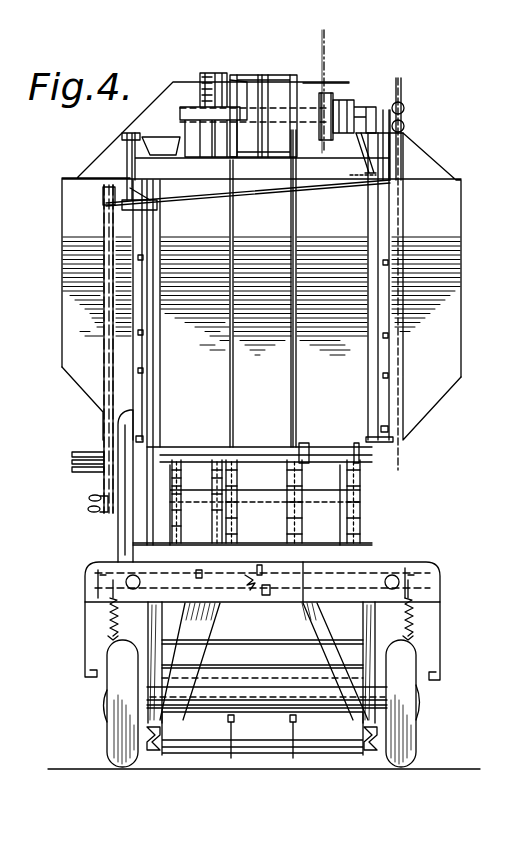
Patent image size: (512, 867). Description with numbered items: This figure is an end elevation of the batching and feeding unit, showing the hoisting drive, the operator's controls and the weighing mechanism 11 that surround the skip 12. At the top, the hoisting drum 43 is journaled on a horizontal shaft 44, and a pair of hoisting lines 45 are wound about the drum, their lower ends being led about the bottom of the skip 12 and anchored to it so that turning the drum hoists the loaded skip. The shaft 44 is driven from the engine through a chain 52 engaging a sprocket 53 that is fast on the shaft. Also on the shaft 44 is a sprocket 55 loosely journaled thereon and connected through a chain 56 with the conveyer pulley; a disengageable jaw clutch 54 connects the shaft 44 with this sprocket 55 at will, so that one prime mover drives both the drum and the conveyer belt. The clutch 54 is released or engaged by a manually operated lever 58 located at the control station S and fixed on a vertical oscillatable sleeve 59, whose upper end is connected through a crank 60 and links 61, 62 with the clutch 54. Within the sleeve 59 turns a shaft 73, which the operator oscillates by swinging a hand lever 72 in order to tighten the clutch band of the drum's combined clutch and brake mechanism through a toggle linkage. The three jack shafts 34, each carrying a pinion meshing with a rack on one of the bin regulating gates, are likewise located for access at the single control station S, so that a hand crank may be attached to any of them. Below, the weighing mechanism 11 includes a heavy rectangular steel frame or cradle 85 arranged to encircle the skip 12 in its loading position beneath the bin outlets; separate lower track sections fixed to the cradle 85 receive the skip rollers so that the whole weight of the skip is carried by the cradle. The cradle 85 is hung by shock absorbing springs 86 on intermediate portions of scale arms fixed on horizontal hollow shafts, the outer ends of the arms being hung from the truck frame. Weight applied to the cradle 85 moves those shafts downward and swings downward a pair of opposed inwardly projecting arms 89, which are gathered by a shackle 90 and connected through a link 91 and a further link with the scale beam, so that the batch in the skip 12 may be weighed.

The hoisting drum 43 is at (279, 84).
The horizontal shaft 44 is at (252, 124).
The hoisting lines 45 is at (293, 323).
The chain 52 is at (403, 377).
The sprocket 53 is at (400, 133).
The disengageable jaw clutch 54 is at (346, 103).
The sprocket 55 is at (329, 87).
The chain 56 is at (328, 58).
The manually operated lever 58 is at (89, 498).
The vertical oscillatable sleeve 59 is at (104, 313).
The crank 60 is at (103, 202).
The link 61 is at (256, 187).
The link 62 is at (363, 150).
The hand lever 72 is at (88, 509).
The shaft 73 is at (105, 392).
The jack shafts 34 is at (72, 469).
The control station S is at (100, 542).
The weighing mechanism 11 is at (107, 552).
The skip 12 is at (352, 720).
The cradle 85 is at (250, 655).
The shock absorbing springs 86 is at (108, 618).
The arms 89 is at (264, 594).
The shackle 90 is at (248, 572).
The link 91 is at (199, 568).